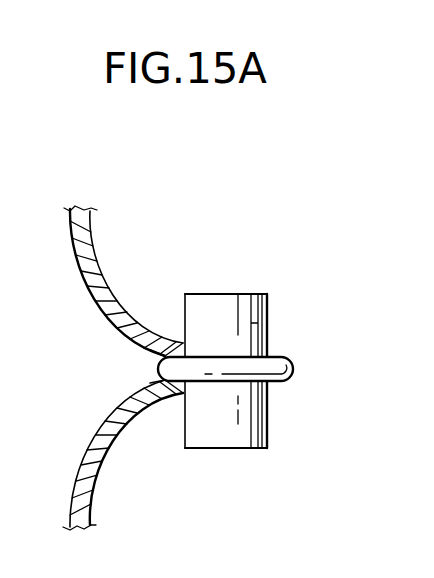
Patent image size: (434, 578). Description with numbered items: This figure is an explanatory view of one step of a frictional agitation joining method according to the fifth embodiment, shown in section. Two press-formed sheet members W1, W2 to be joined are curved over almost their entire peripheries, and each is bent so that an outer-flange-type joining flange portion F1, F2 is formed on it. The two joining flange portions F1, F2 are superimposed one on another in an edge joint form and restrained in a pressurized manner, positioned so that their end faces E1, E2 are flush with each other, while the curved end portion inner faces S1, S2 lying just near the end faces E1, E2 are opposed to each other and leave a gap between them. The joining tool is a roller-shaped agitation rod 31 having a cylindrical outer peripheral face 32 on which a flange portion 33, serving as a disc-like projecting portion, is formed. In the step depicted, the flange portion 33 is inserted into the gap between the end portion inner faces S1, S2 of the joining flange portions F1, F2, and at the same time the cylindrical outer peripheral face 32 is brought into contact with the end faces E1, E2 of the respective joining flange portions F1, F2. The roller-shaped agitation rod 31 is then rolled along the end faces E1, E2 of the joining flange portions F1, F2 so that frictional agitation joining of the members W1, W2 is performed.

The member to be joined W1 is at (96, 237).
The member to be joined W2 is at (96, 514).
The joining flange portion F1 is at (174, 343).
The joining flange portion F2 is at (174, 401).
The curved end portion inner face S1 is at (165, 359).
The curved end portion inner face S2 is at (165, 381).
The end face E1 is at (186, 354).
The end face E2 is at (186, 386).
The agitation rod 31 is at (259, 370).
The cylindrical outer peripheral face 32 is at (265, 370).
The flange portion 33 is at (295, 371).